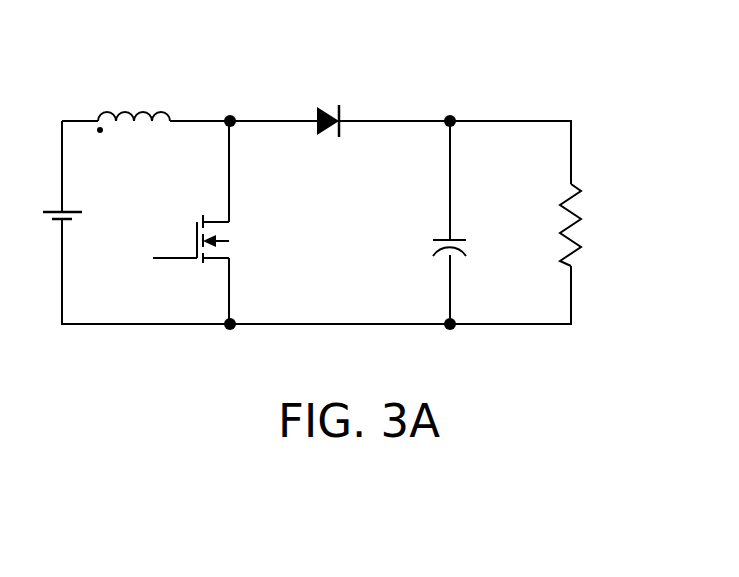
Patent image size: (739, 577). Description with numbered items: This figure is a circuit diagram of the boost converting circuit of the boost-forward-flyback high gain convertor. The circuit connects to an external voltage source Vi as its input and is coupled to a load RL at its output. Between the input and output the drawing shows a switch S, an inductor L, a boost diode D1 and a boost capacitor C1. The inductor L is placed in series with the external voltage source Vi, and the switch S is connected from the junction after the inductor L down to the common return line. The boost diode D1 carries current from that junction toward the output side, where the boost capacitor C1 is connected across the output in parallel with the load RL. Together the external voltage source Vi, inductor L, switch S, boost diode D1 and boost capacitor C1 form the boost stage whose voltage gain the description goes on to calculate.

The inductor L is at (133, 105).
The external voltage source Vi is at (79, 214).
The switch S is at (191, 239).
The boost diode D1 is at (328, 141).
The boost capacitor C1 is at (430, 246).
The load RL is at (600, 225).